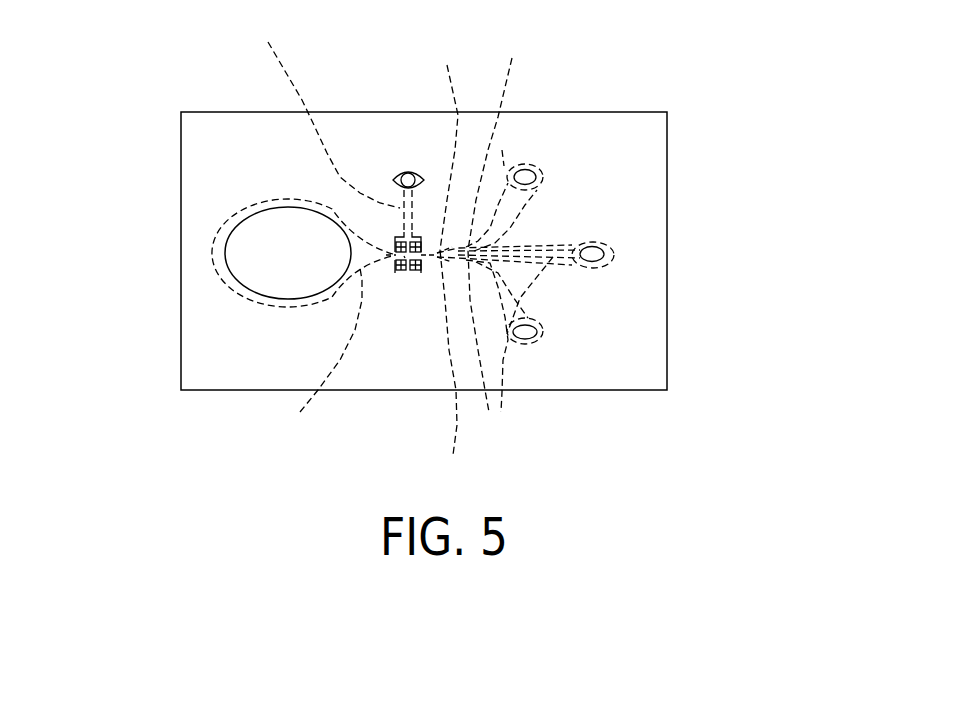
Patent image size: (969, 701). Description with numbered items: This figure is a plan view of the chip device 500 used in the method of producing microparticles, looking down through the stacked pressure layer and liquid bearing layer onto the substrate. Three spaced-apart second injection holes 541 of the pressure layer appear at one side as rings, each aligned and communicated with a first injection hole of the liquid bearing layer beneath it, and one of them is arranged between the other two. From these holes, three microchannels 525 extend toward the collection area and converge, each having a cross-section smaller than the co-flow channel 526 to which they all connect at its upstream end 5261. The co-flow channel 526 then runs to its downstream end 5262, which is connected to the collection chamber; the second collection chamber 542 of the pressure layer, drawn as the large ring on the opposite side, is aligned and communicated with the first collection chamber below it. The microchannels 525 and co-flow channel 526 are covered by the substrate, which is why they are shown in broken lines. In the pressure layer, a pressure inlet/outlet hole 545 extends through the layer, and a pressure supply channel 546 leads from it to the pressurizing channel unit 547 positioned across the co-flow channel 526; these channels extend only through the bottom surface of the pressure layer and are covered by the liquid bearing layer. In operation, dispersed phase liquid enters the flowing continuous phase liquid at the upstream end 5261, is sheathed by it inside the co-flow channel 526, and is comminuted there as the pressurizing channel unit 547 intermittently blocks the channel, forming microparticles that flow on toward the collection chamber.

The chip device 500 is at (690, 114).
The second injection holes 541 is at (525, 332).
The second collection chamber 542 is at (233, 252).
The pressure inlet/outlet hole 545 is at (408, 178).
The pressure supply channel 546 is at (321, 110).
The pressurizing channel unit 547 is at (403, 273).
The microchannels 525 is at (508, 237).
The co-flow channel 526 is at (448, 144).
The upstream end 5261 is at (463, 371).
The downstream end 5262 is at (301, 355).